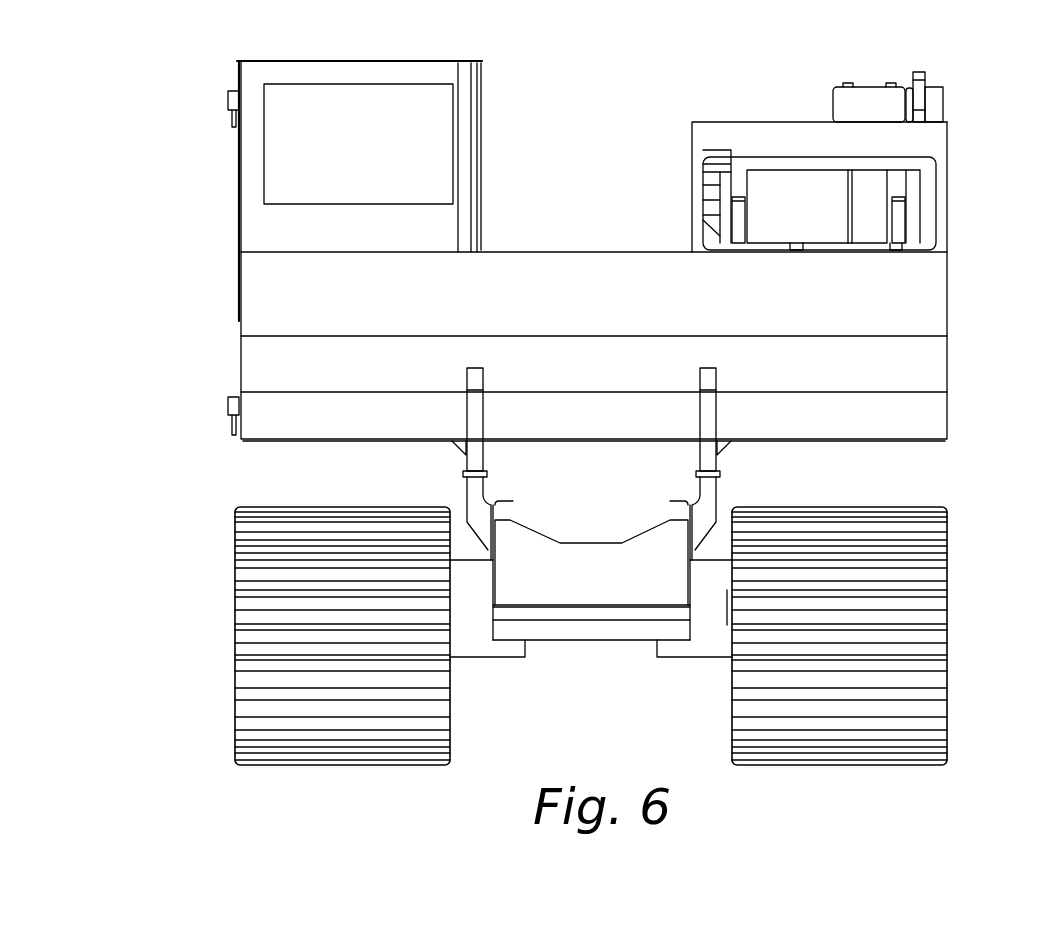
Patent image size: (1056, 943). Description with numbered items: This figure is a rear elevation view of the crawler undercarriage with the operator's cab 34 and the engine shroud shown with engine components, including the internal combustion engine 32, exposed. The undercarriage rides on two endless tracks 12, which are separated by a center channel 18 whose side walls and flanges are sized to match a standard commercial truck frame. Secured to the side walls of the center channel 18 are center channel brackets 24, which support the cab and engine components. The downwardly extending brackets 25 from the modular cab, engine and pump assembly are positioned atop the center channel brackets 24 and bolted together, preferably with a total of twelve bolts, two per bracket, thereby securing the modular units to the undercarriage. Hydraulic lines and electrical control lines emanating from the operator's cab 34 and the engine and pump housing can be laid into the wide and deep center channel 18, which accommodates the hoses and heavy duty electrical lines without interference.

The endless tracks 12 is at (236, 640).
The center channel 18 is at (605, 607).
The brackets 24 is at (483, 472).
The downwardly extending brackets 25 is at (483, 420).
The internal combustion engine 32 is at (880, 87).
The operator's cab 34 is at (434, 60).